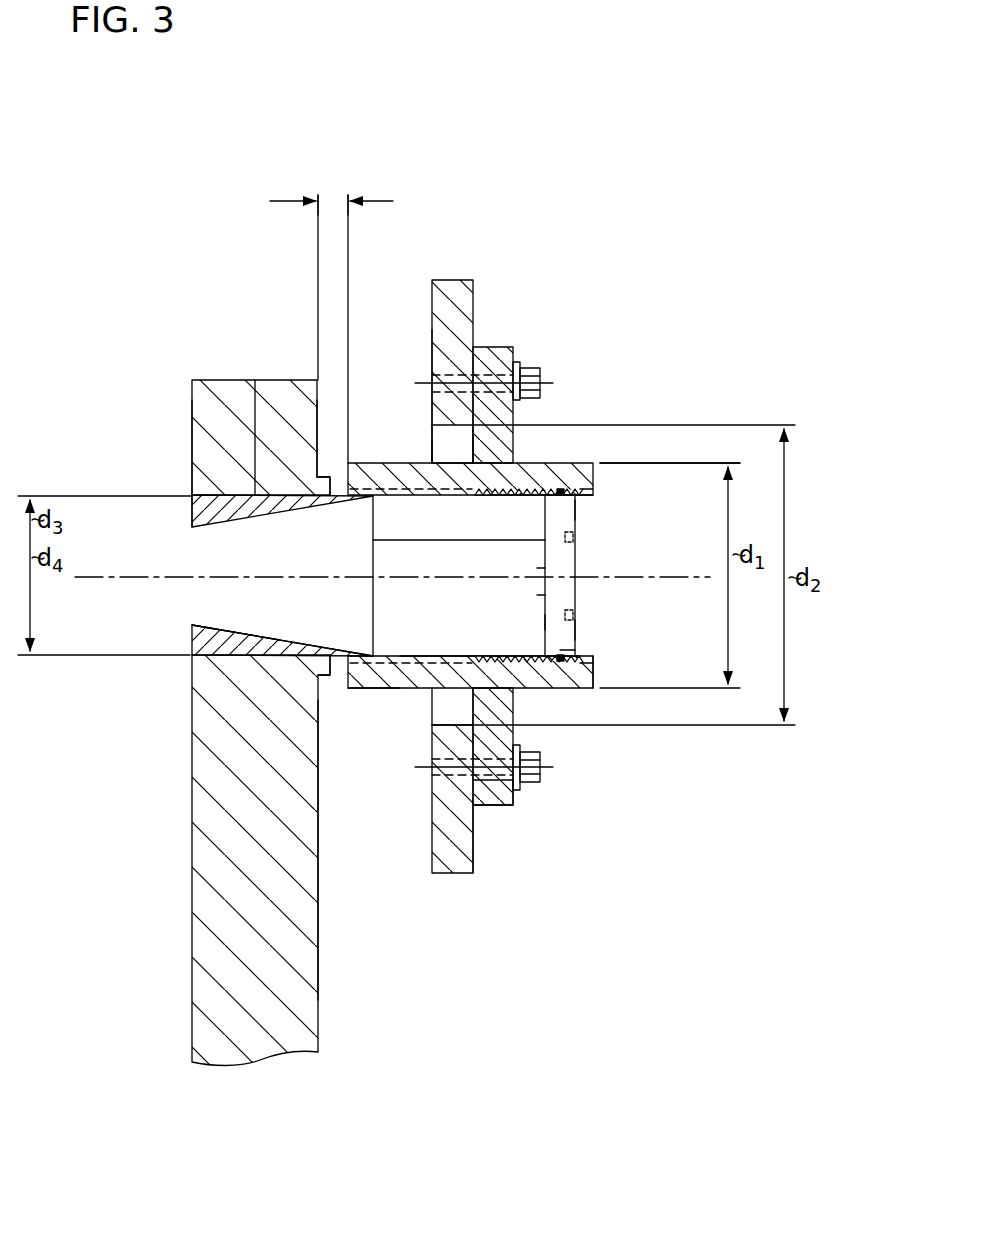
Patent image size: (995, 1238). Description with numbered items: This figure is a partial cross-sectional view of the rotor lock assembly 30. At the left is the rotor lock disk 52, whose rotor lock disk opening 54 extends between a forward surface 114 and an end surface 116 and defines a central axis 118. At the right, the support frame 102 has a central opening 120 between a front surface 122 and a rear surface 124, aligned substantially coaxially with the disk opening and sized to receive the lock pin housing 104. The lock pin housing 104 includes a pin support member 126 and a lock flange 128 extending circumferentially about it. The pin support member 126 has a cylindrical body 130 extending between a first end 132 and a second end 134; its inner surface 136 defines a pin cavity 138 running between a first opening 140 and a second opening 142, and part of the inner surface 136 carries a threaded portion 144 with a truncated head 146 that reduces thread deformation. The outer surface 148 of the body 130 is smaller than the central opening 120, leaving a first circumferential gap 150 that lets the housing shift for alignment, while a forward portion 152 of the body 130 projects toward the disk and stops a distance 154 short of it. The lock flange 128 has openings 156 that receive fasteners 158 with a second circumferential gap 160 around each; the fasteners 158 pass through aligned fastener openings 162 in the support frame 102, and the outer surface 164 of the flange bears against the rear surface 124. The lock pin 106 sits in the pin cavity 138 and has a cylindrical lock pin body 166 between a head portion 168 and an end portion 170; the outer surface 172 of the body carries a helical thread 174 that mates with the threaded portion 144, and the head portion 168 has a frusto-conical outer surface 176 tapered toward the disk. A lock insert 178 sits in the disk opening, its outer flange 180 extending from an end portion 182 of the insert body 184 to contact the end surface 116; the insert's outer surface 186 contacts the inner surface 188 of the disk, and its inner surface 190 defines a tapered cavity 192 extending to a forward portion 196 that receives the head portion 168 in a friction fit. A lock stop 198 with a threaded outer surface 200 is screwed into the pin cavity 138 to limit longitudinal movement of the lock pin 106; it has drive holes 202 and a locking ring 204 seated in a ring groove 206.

The rotor lock assembly 30 is at (236, 186).
The rotor lock disk 52 is at (208, 380).
The rotor lock disk opening 54 is at (157, 542).
The support frame 102 is at (460, 280).
The lock pin housing 104 is at (588, 463).
The lock pin 106 is at (537, 568).
The forward surface 114 is at (192, 783).
The end surface 116 is at (318, 893).
The central axis 118 is at (702, 575).
The central opening 120 is at (427, 423).
The front surface 122 is at (432, 832).
The rear surface 124 is at (473, 853).
The pin support member 126 is at (403, 688).
The lock flange 128 is at (513, 712).
The body 130 is at (423, 727).
The first end 132 is at (373, 688).
The second end 134 is at (592, 690).
The inner surface 136 is at (473, 650).
The pin cavity 138 is at (522, 622).
The first opening 140 is at (348, 635).
The second opening 142 is at (595, 630).
The threaded portion 144 is at (524, 503).
The truncated head 146 is at (496, 501).
The outer surface 148 is at (424, 463).
The first circumferential gap 150 is at (450, 444).
The forward portion 152 is at (368, 777).
The distance 154 is at (384, 201).
The opening 156 is at (528, 358).
The fastener 158 is at (535, 382).
The second circumferential gap 160 is at (502, 397).
The fastener opening 162 is at (428, 380).
The outer surface 164 is at (470, 795).
The lock pin body 166 is at (402, 557).
The head portion 168 is at (373, 497).
The end portion 170 is at (537, 595).
The outer surface 172 is at (470, 650).
The helical thread 174 is at (509, 651).
The outer surface 176 is at (258, 520).
The lock insert 178 is at (192, 639).
The outer flange 180 is at (325, 475).
The end portion 182 is at (302, 503).
The insert body 184 is at (267, 507).
The outer surface 186 is at (237, 497).
The inner surface 188 is at (197, 500).
The inner surface 190 is at (263, 637).
The tapered cavity 192 is at (210, 588).
The forward portion 196 is at (223, 645).
The lock stop 198 is at (577, 508).
The threaded outer surface 200 is at (585, 500).
The drive hole 202 is at (580, 537).
The locking ring 204 is at (563, 656).
The ring groove 206 is at (563, 498).